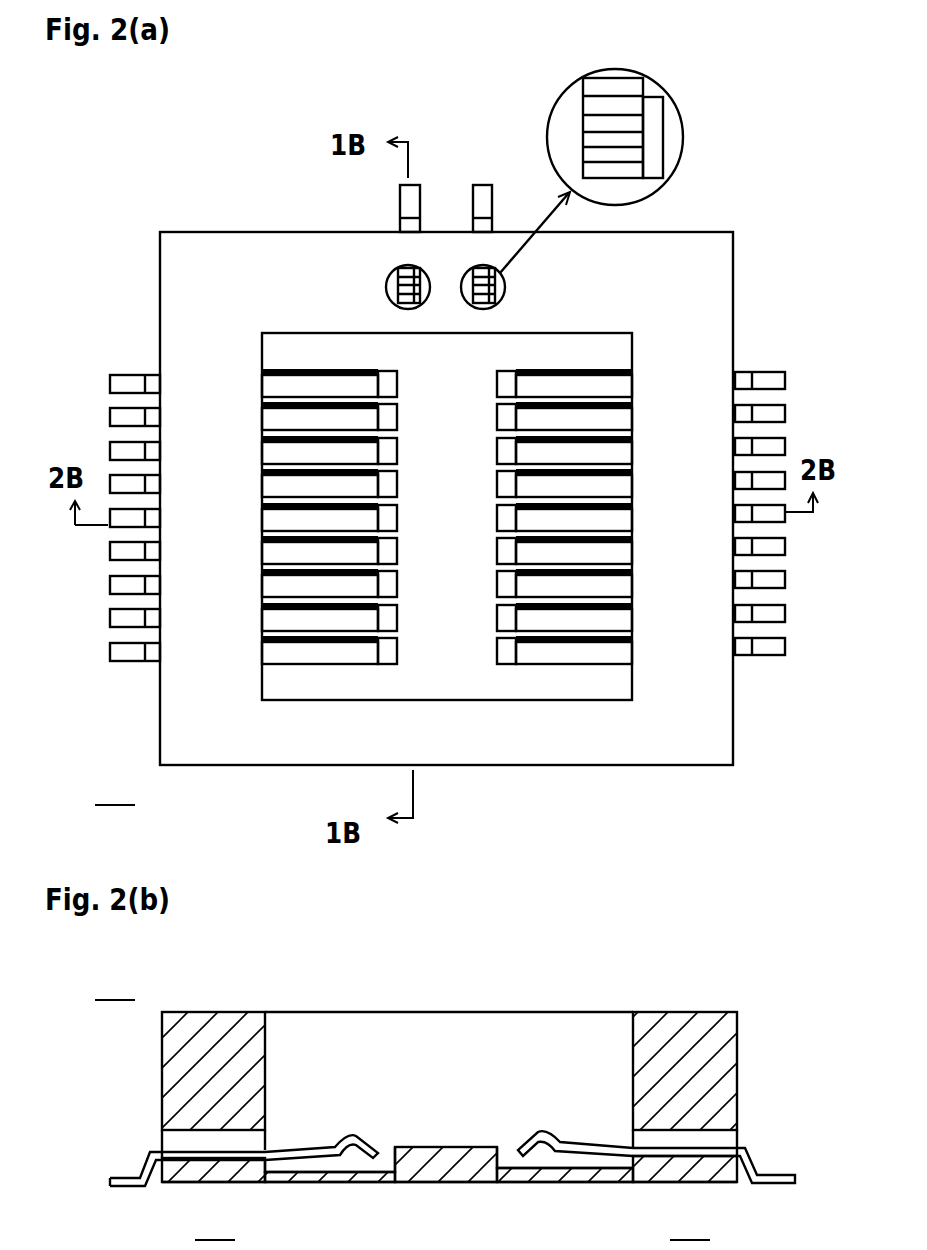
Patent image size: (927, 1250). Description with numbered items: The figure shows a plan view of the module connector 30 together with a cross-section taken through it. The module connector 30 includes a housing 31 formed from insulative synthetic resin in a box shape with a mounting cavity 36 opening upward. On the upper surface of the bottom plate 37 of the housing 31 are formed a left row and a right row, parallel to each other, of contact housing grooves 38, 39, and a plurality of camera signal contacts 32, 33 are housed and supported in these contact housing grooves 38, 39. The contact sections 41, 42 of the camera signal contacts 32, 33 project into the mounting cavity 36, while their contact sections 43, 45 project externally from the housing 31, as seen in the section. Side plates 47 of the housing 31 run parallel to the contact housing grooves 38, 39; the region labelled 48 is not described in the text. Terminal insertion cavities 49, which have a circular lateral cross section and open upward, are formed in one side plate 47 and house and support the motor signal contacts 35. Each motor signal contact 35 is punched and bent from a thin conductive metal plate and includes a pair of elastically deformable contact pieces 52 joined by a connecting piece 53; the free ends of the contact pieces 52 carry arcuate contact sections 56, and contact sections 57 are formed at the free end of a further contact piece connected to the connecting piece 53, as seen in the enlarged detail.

In FIG. 2A, the module connector 30 is at (195, 200).
In FIG. 2A, the housing 31 is at (172, 750).
In FIG. 2B, the housing 31 is at (170, 1040).
In FIG. 2A, the camera signal contact 32 is at (112, 620).
In FIG. 2B, the camera signal contact 32 is at (208, 1162).
In FIG. 2A, the camera signal contact 33 is at (778, 617).
In FIG. 2A, the motor signal contact 35 is at (401, 208).
In FIG. 2A, the mounting cavity 36 is at (270, 345).
In FIG. 2B, the mounting cavity 36 is at (322, 1022).
In FIG. 2B, the bottom plate 37 is at (440, 1182).
In FIG. 2A, the contact housing groove 38 is at (390, 662).
In FIG. 2B, the contact housing groove 38 is at (323, 1165).
In FIG. 2A, the contact housing groove 39 is at (512, 662).
In FIG. 2B, the contact housing groove 39 is at (572, 1165).
In FIG. 2A, the contact section 41 is at (375, 420).
In FIG. 2B, the contact section 41 is at (356, 1137).
In FIG. 2B, the contact section 42 is at (540, 1134).
In FIG. 2A, the contact section 43 is at (112, 412).
In FIG. 2B, the contact section 43 is at (126, 1175).
In FIG. 2B, the contact section 45 is at (781, 1172).
In FIG. 2A, the side plate 47 is at (232, 244).
In FIG. 2A, the lower housing wall 48 is at (593, 735).
In FIG. 2A, the terminal insertion cavity 49 is at (408, 309).
In FIG. 2A, the contact piece 52 is at (421, 303).
In FIG. 2A, the connecting piece 53 is at (393, 290).
In FIG. 2A, the contact section 56 is at (585, 98).
In FIG. 2A, the contact section 57 is at (492, 205).